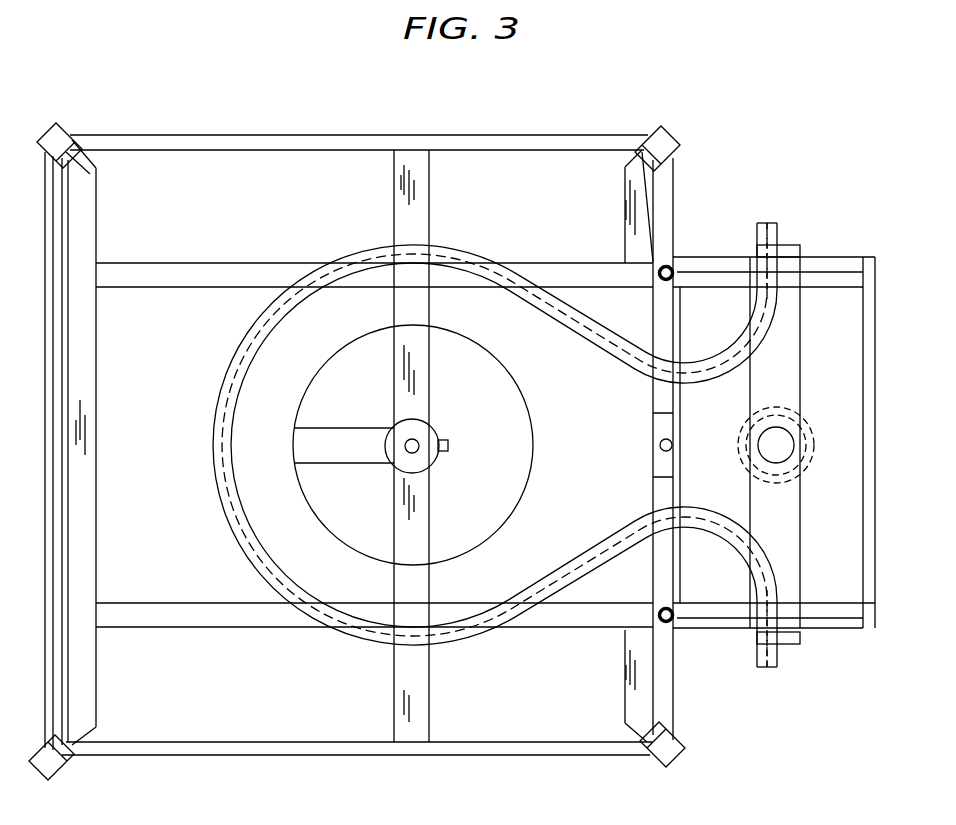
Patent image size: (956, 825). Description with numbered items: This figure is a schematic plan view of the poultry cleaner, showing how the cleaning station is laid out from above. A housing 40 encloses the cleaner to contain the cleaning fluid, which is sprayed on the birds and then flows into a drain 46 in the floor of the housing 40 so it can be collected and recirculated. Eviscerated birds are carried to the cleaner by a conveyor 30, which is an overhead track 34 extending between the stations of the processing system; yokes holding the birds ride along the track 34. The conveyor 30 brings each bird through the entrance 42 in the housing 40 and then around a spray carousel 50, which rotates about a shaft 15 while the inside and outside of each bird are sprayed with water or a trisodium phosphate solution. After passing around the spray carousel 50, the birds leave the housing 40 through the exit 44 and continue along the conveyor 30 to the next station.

The housing 40 is at (293, 150).
The conveyor 30 is at (200, 410).
The overhead track 34 is at (446, 258).
The spray carousel 50 is at (531, 440).
The shaft 15 is at (437, 457).
The entrance 42 is at (782, 245).
The exit 44 is at (790, 644).
The drain 46 is at (806, 470).